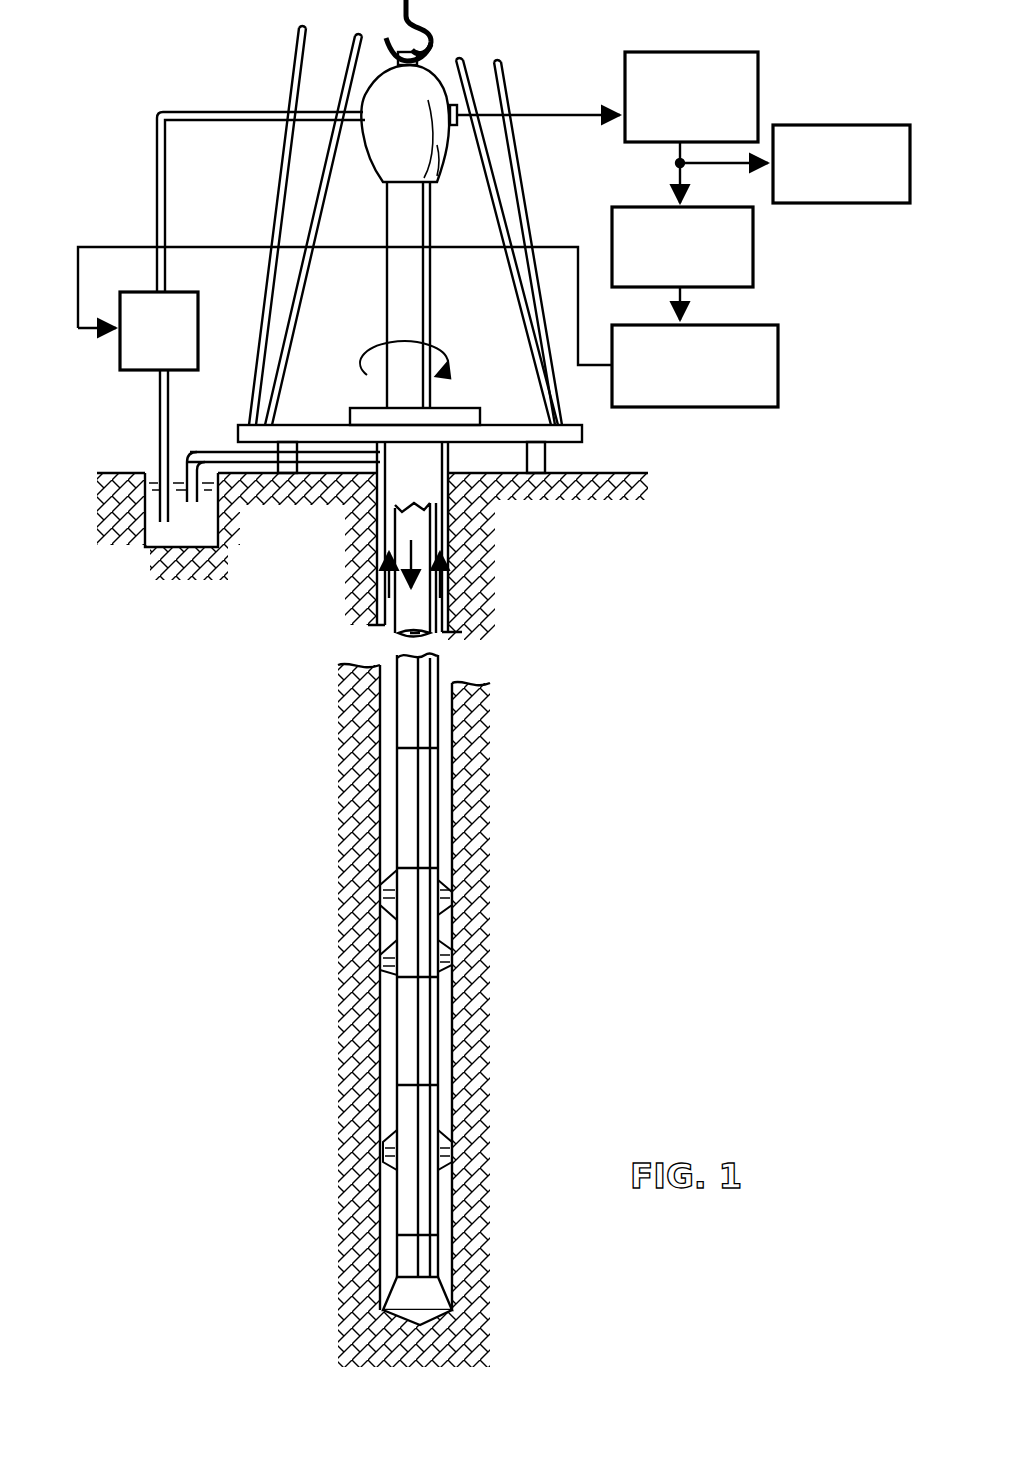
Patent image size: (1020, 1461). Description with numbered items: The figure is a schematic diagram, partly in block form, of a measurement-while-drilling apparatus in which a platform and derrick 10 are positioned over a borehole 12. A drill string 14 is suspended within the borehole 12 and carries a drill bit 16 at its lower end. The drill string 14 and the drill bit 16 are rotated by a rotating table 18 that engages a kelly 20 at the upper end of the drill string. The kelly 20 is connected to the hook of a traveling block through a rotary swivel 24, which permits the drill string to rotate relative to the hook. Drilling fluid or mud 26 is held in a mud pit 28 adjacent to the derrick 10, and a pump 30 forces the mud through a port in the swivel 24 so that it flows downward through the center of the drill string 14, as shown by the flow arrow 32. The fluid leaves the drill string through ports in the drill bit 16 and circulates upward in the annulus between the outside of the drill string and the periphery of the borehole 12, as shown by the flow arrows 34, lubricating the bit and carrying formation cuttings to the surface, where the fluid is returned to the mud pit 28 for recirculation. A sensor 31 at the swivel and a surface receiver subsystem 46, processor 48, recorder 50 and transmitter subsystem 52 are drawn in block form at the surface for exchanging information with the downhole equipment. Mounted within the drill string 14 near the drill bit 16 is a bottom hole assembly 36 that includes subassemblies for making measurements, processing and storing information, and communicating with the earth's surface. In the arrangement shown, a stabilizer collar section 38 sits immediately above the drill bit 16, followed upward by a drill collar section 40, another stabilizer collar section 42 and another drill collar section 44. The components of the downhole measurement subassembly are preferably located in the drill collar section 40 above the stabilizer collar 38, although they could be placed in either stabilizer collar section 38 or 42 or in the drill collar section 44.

The platform and derrick 10 is at (614, 433).
The borehole 12 is at (445, 634).
The drill string 14 is at (406, 716).
The drill bit 16 is at (410, 1300).
The rotating table 18 is at (465, 415).
The kelly 20 is at (405, 212).
The rotary swivel 24 is at (382, 178).
The drilling fluid or mud 26 is at (190, 525).
The mud pit 28 is at (141, 512).
The pump 30 is at (193, 300).
The pressure transducer 31 is at (457, 125).
The flow arrow 32 is at (380, 575).
The flow arrows 34 is at (446, 580).
The bottom hole assembly 36 is at (724, 686).
The stabilizer collar section 38 is at (405, 1133).
The drill collar section 40 is at (410, 1045).
The stabilizer collar section 42 is at (405, 935).
The drill collar section 44 is at (397, 786).
The receiver subsystem 46 is at (670, 52).
The processor 48 is at (753, 248).
The recorder 50 is at (845, 128).
The transmitter subsystem 52 is at (772, 367).